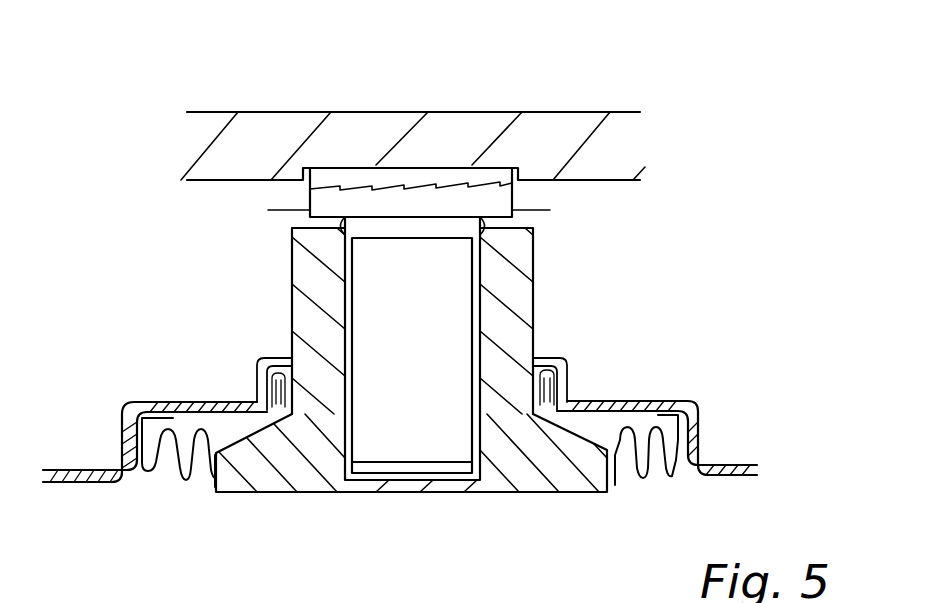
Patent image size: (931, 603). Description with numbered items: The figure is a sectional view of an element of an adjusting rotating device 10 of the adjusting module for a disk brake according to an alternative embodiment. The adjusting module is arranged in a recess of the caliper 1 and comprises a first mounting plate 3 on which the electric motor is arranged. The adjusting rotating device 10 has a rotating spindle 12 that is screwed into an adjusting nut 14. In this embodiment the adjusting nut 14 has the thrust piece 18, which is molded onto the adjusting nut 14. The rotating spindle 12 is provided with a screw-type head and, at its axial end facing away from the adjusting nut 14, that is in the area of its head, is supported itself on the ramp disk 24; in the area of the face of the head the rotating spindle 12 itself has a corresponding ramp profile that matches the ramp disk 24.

The caliper 1 is at (568, 128).
The first mounting plate 3 is at (77, 484).
The adjusting rotating device 10 is at (720, 164).
The rotating spindle 12 is at (382, 263).
The adjusting nut 14 is at (315, 315).
The thrust piece 18 is at (313, 450).
The ramp disk 24 is at (385, 175).